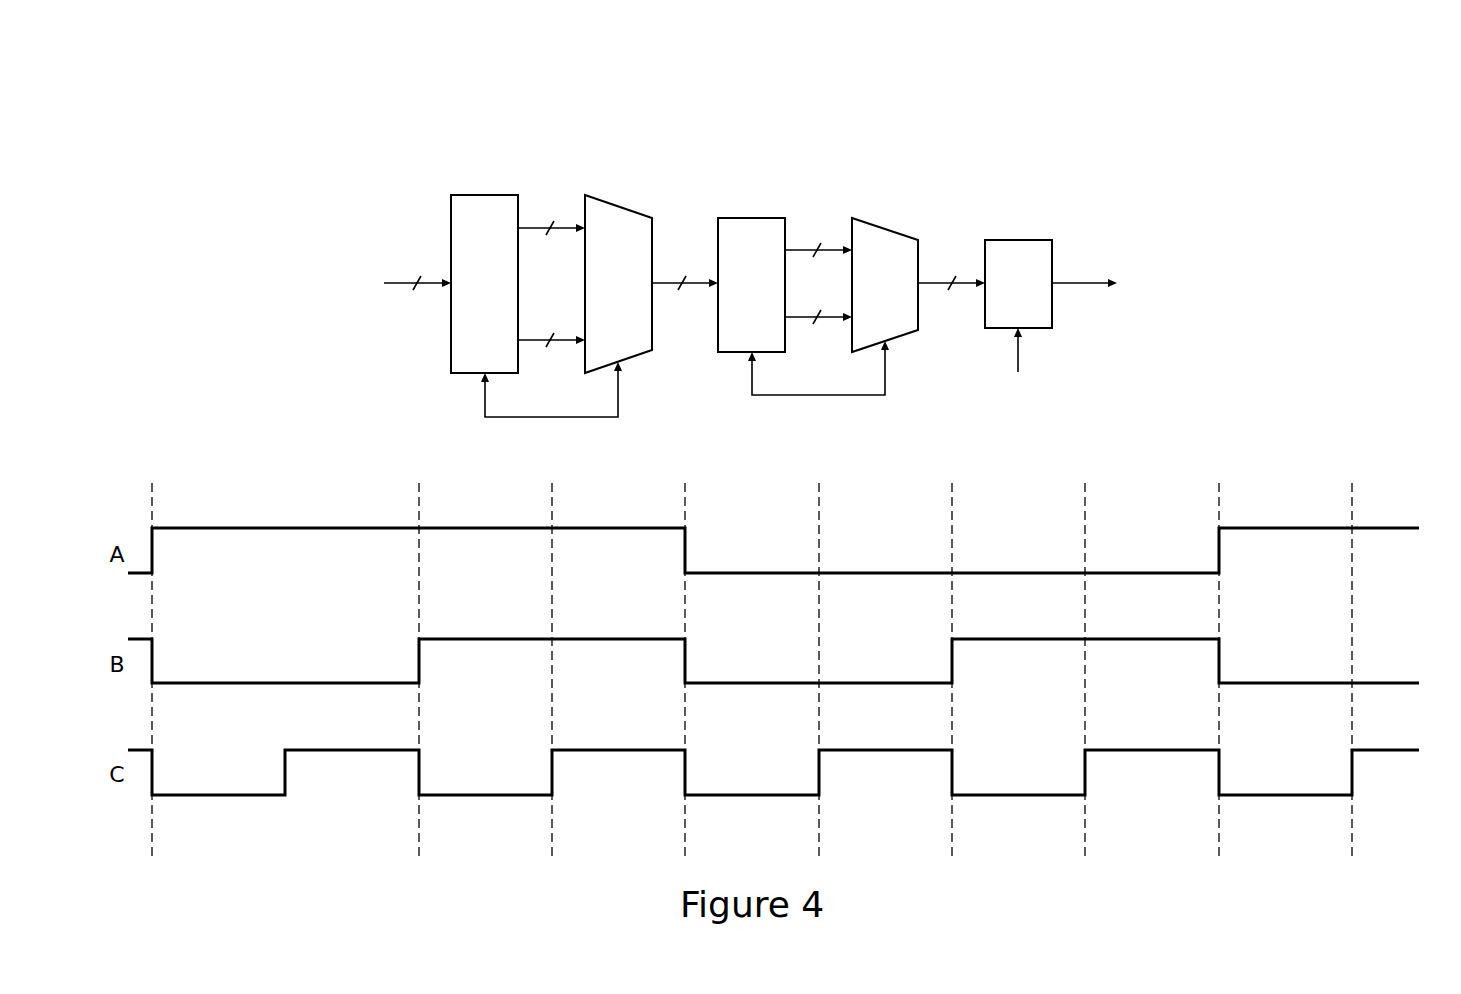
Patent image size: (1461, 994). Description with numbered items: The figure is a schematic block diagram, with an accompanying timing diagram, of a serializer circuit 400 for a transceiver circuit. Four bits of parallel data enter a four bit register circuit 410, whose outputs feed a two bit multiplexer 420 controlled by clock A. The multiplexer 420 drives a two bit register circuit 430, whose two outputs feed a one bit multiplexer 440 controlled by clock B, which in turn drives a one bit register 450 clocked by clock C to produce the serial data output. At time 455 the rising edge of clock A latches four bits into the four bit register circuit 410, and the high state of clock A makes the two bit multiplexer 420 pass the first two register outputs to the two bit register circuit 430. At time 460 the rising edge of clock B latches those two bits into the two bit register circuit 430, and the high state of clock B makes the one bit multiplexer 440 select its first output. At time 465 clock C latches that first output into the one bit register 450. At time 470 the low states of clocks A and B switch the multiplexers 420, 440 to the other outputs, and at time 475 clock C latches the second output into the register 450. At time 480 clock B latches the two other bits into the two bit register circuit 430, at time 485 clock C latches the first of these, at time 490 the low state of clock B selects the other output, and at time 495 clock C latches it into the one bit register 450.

The serializer circuit 400 is at (991, 98).
The four bit register circuit 410 is at (474, 195).
The two bit multiplexer 420 is at (633, 210).
The two bit register circuit 430 is at (740, 218).
The one bit multiplexer 440 is at (895, 229).
The one bit register 450 is at (1030, 240).
The time 455 is at (152, 832).
The time 460 is at (419, 832).
The time 465 is at (552, 832).
The time 470 is at (685, 832).
The time 475 is at (819, 832).
The time 480 is at (952, 832).
The time 485 is at (1085, 832).
The time 490 is at (1219, 832).
The time 495 is at (1352, 832).